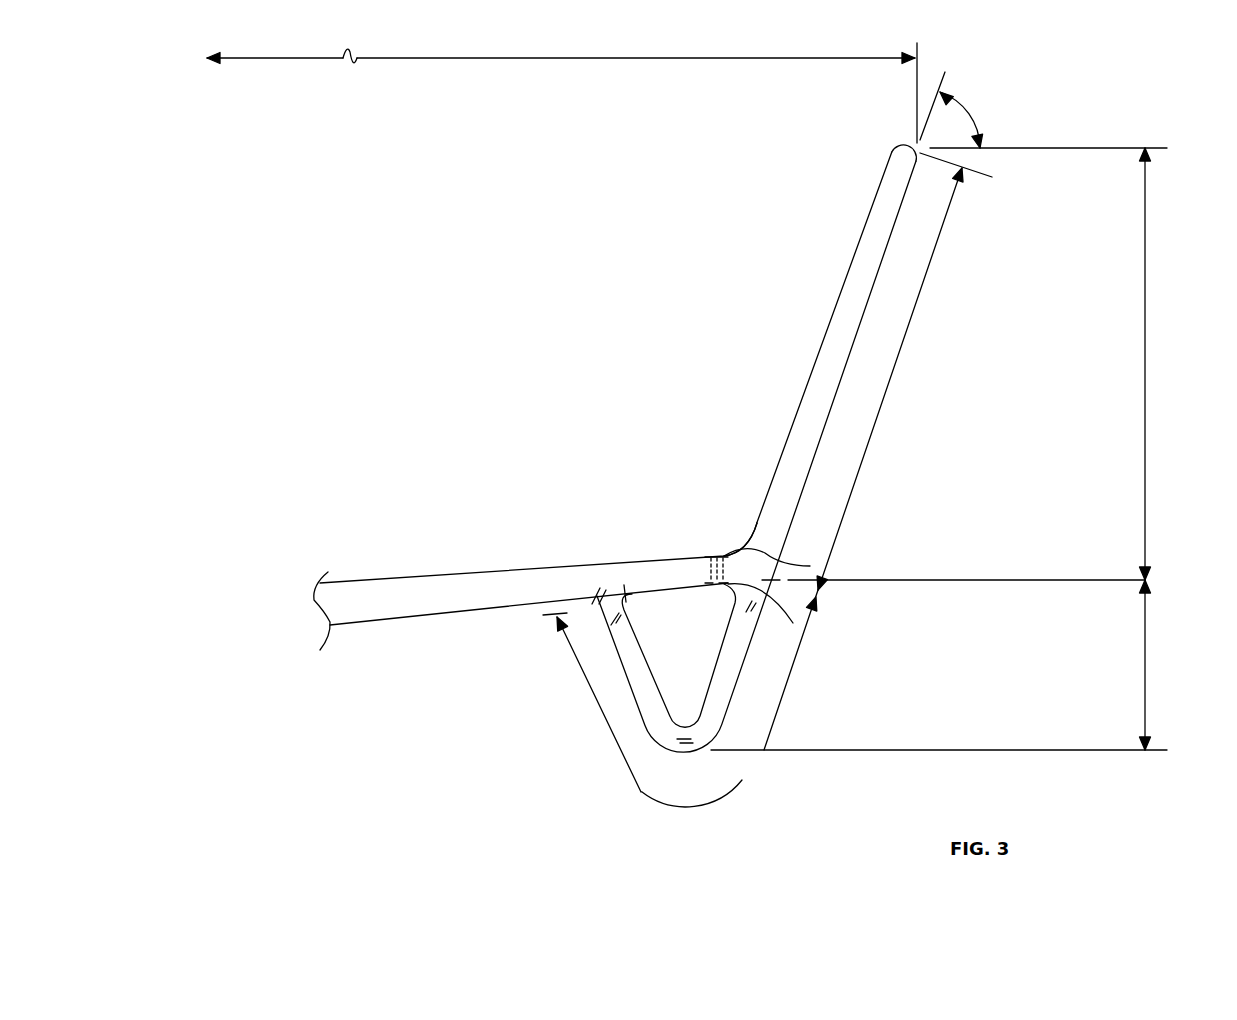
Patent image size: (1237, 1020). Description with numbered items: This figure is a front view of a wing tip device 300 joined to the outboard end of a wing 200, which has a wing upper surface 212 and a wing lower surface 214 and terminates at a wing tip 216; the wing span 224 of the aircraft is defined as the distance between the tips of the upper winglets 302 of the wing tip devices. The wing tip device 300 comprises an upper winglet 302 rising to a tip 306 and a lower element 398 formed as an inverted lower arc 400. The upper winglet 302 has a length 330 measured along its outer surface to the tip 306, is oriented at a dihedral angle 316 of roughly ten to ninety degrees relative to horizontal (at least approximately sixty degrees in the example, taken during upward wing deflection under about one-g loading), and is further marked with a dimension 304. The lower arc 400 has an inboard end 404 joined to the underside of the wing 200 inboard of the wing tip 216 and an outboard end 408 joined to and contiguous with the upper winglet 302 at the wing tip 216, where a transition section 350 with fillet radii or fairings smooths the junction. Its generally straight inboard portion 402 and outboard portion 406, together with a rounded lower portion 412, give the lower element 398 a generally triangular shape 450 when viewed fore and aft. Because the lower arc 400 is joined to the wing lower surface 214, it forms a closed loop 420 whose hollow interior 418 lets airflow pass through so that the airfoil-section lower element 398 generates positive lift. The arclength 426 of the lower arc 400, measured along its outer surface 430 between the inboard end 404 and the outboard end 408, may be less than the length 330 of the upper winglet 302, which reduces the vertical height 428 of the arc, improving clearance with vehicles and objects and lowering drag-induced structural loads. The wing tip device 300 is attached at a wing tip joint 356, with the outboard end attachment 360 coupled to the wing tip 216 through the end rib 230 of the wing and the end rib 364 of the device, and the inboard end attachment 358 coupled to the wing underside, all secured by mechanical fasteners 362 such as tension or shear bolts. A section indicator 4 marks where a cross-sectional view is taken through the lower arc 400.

The section line 4- 4 is at (690, 187).
The wing 200 is at (350, 539).
The wing upper surface 212 is at (436, 573).
The wing lower surface 214 is at (427, 614).
The wing tip 216 is at (692, 554).
The wing span 224 is at (500, 60).
The end rib 230 is at (693, 568).
The wing tip device 300 is at (775, 296).
The upper winglet 302 is at (880, 190).
The shaft length / upper shaft portion 304 is at (1150, 322).
The tip 306 is at (903, 146).
The dihedral angle 316 is at (983, 101).
The length 330 is at (896, 391).
The transition section 350 is at (742, 530).
The wing tip joint 356 is at (715, 553).
The inboard end attachment 358 is at (597, 619).
The outboard end attachment 360 is at (752, 607).
The mechanical fasteners 362 is at (810, 566).
The end rib 364 is at (717, 586).
The lower element 398 is at (717, 737).
The lower arc 400 is at (681, 753).
The inboard portion 402 is at (633, 683).
The inboard end 404 is at (582, 668).
The outboard portion 406 is at (727, 677).
The outboard end 408 is at (760, 613).
The rounded lower portion 412 is at (684, 748).
The hollow interior 418 is at (680, 705).
The closed loop 420 is at (640, 717).
The arclength 426 is at (718, 803).
The vertical height 428 is at (1150, 637).
The outer surface 430 is at (732, 700).
The triangular shape 450 is at (723, 723).